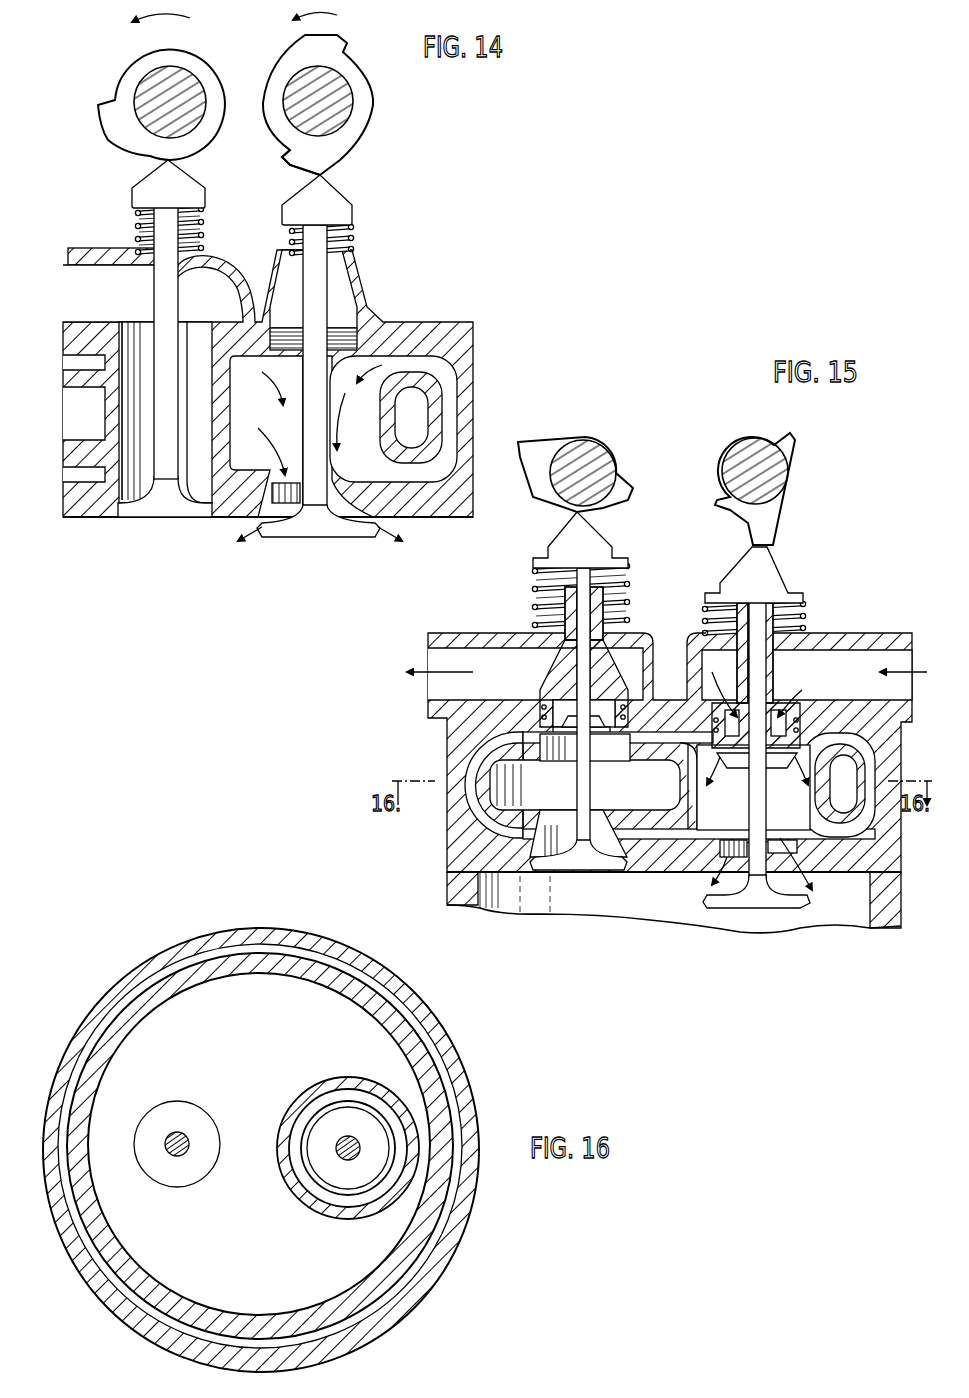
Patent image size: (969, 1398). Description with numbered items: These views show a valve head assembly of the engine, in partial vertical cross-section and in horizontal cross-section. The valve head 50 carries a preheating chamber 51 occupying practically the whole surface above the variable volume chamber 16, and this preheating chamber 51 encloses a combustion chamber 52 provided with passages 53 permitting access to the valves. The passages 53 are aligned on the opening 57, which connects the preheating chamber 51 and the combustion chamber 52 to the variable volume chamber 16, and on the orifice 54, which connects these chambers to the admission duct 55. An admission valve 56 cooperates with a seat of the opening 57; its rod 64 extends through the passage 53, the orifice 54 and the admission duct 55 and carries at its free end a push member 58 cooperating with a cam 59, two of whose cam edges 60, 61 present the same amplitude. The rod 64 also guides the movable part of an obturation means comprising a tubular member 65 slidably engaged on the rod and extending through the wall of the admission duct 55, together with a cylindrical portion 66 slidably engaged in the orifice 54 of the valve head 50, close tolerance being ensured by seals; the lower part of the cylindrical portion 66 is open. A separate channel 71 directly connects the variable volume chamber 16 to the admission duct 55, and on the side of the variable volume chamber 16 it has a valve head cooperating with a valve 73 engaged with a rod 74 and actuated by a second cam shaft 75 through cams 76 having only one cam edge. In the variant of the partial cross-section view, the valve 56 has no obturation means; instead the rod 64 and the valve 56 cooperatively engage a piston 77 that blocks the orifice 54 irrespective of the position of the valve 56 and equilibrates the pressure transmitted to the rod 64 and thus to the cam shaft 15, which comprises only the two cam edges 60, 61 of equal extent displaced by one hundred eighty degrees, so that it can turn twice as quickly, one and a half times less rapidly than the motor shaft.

In FIG. 14, the cam shaft 15 is at (297, 98).
In FIG. 14, the variable volume chamber 16 is at (214, 566).
In FIG. 15, the variable volume chamber 16 is at (627, 906).
In FIG. 14, the valve head 50 is at (457, 340).
In FIG. 15, the valve head 50 is at (467, 720).
In FIG. 14, the preheating chamber 51 is at (450, 407).
In FIG. 15, the preheating chamber 51 is at (873, 835).
In FIG. 16, the preheating chamber 51 is at (438, 1057).
In FIG. 14, the combustion chamber 52 is at (424, 426).
In FIG. 15, the combustion chamber 52 is at (639, 798).
In FIG. 16, the combustion chamber 52 is at (254, 1223).
In FIG. 15, the passage 53 is at (799, 805).
In FIG. 16, the passage 53 is at (310, 1122).
In FIG. 15, the orifice 54 is at (740, 692).
In FIG. 14, the admission duct 55 is at (110, 305).
In FIG. 15, the admission duct 55 is at (870, 690).
In FIG. 14, the admission valve 56 is at (307, 533).
In FIG. 15, the admission valve 56 is at (787, 910).
In FIG. 16, the admission valve 56 is at (358, 1133).
In FIG. 15, the opening 57 is at (723, 863).
In FIG. 15, the push member 58 is at (762, 577).
In FIG. 15, the cam 59 is at (777, 475).
In FIG. 14, the cam edge 60 is at (330, 33).
In FIG. 14, the cam edge 61 is at (293, 167).
In FIG. 14, the valve rod 64 is at (312, 435).
In FIG. 15, the valve rod 64 is at (753, 800).
In FIG. 16, the valve rod 64 is at (355, 1159).
In FIG. 15, the tubular member 65 is at (775, 688).
In FIG. 15, the cylindrical portion 66 is at (787, 705).
In FIG. 14, the channel 71 is at (209, 426).
In FIG. 14, the valve 73 is at (178, 511).
In FIG. 14, the rod 74 is at (170, 316).
In FIG. 14, the second cam shaft 75 is at (179, 80).
In FIG. 14, the cam 76 is at (103, 138).
In FIG. 14, the piston 77 is at (347, 328).